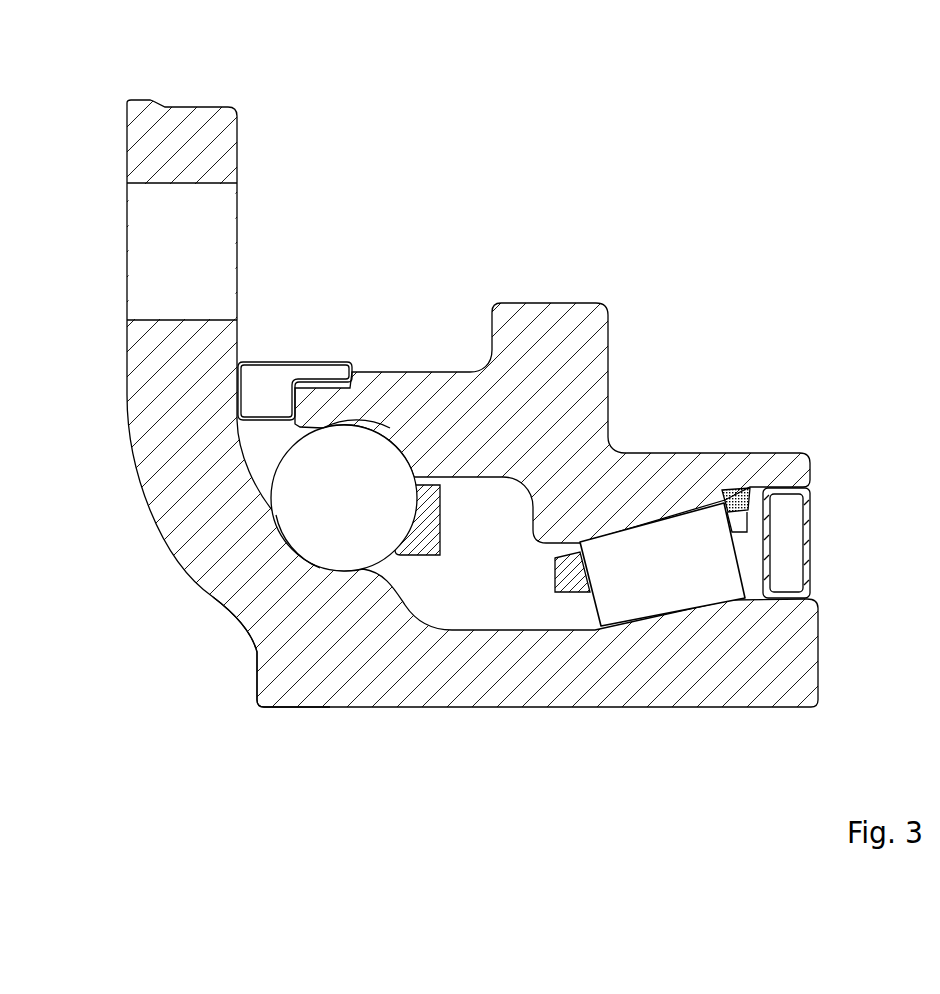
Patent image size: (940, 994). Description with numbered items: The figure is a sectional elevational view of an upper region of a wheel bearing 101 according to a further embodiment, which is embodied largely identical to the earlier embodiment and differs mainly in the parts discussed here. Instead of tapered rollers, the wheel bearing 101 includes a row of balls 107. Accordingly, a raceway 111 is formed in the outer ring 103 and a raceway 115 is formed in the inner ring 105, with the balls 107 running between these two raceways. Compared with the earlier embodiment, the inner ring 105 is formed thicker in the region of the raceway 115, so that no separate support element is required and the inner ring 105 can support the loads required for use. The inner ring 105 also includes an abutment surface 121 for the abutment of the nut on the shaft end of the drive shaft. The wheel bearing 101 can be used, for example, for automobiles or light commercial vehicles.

The wheel bearing 101 is at (501, 407).
The outer ring 103 is at (593, 380).
The inner ring 105 is at (522, 407).
The balls 107 is at (369, 518).
The raceway 111 is at (385, 419).
The raceway 115 is at (286, 559).
The abutment surface 121 is at (248, 680).